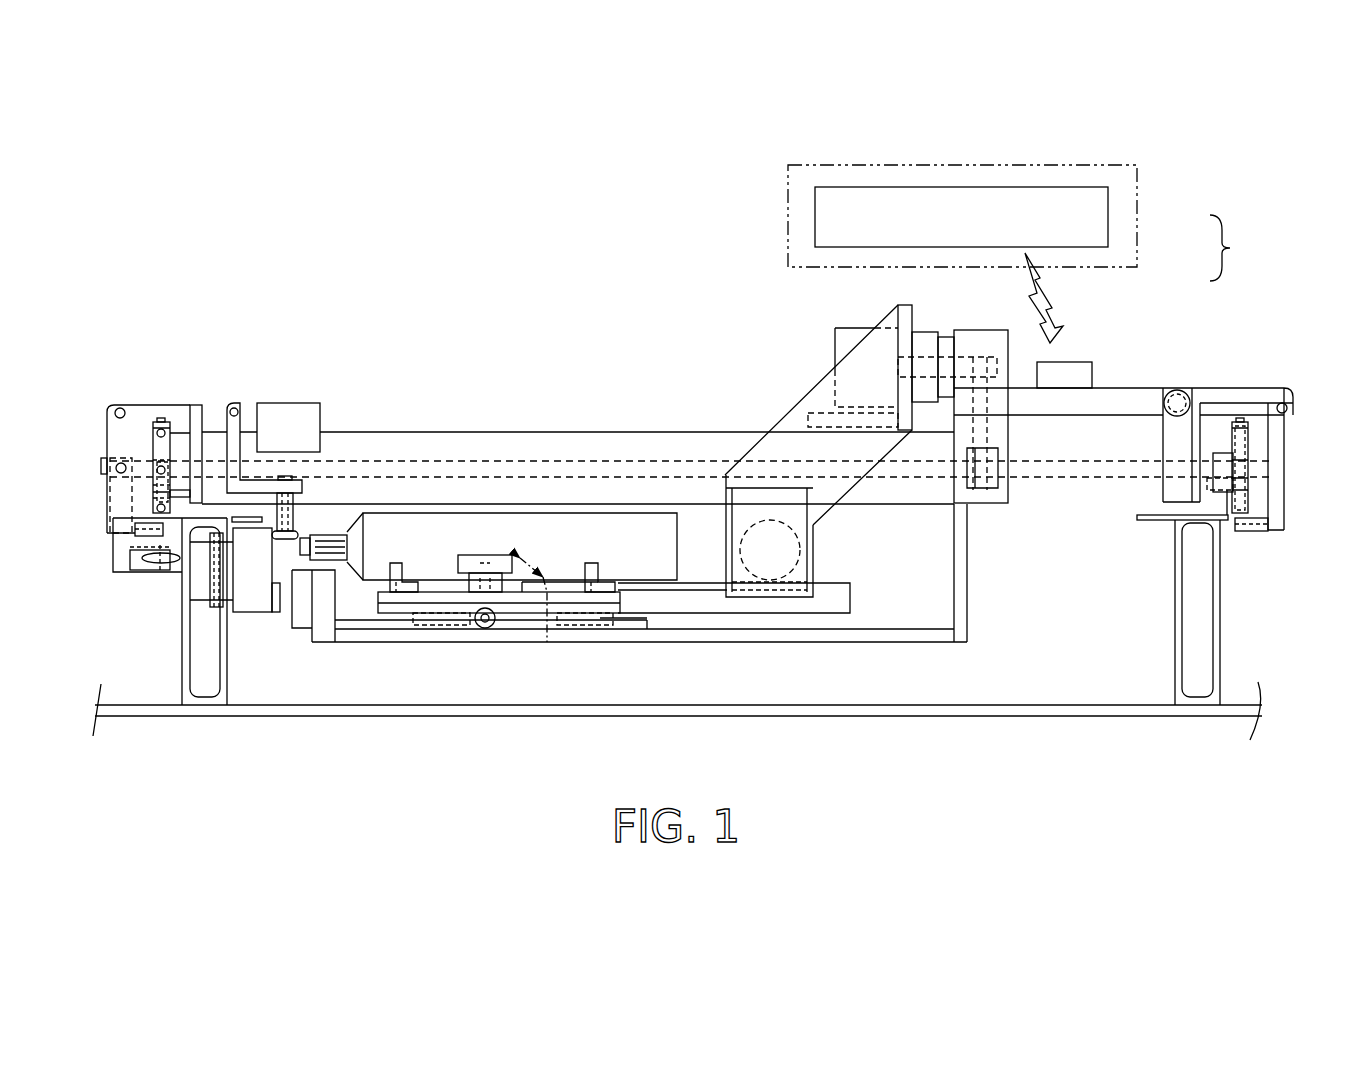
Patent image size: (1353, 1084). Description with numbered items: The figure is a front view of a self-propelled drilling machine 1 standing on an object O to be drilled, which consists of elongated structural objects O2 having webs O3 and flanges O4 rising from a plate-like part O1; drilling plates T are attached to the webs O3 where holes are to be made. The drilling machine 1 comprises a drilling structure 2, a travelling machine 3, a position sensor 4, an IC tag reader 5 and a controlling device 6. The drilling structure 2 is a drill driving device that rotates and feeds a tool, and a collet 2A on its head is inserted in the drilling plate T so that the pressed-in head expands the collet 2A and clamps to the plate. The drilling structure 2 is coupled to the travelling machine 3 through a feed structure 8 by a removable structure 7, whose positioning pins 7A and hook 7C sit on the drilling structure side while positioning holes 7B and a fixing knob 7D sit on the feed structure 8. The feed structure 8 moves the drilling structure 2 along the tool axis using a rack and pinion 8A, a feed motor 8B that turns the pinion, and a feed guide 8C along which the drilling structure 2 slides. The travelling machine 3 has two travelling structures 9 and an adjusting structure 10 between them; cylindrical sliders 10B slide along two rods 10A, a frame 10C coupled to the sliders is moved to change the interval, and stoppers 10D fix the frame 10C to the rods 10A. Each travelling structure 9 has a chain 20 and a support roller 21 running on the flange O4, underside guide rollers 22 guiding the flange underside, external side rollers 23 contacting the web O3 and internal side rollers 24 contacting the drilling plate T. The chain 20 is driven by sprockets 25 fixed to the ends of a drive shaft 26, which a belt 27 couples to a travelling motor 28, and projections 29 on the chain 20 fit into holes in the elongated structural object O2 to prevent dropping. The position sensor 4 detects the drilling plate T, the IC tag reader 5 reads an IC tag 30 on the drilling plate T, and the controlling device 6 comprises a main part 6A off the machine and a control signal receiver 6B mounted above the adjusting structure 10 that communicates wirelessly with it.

The drilling machine 1 is at (373, 240).
The drilling structure 2 is at (625, 508).
The collet 2A is at (338, 560).
The travelling machine 3 is at (150, 452).
The position sensor 4 is at (289, 403).
The IC tag reader 5 is at (297, 630).
The controlling device 6 is at (1022, 254).
The main part 6A is at (1108, 213).
The control signal receiver 6B is at (1063, 362).
The removable structure 7 is at (468, 552).
The positioning pin 7A is at (412, 560).
The positioning hole 7B is at (412, 560).
The hook 7C is at (493, 613).
The fixing knob 7D is at (500, 553).
The feed structure 8 is at (735, 618).
The rack and pinion 8A is at (817, 614).
The feed motor 8B is at (773, 573).
The feed guide 8C is at (647, 627).
The travelling structure 9 is at (150, 502).
The adjusting structure 10 is at (1108, 384).
The rod 10A is at (1097, 478).
The cylindrical slider 10B is at (1223, 452).
The frame 10C is at (1143, 388).
The stopper 10D is at (1175, 417).
The chain 20 is at (168, 430).
The support roller 21 is at (175, 492).
The underside guide roller 22 is at (142, 536).
The external side roller 23 is at (152, 565).
The internal side roller 24 is at (300, 532).
The sprocket 25 is at (165, 425).
The drive shaft 26 is at (345, 462).
The belt 27 is at (990, 428).
The travelling motor 28 is at (850, 328).
The projection 29 is at (163, 420).
The IC tag 30 is at (274, 614).
The drilling plate T is at (255, 615).
The object to be drilled O is at (340, 720).
The plate-like part O1 is at (457, 718).
The elongated structural object O2 is at (180, 656).
The web O3 is at (181, 620).
The flange O4 is at (1143, 517).